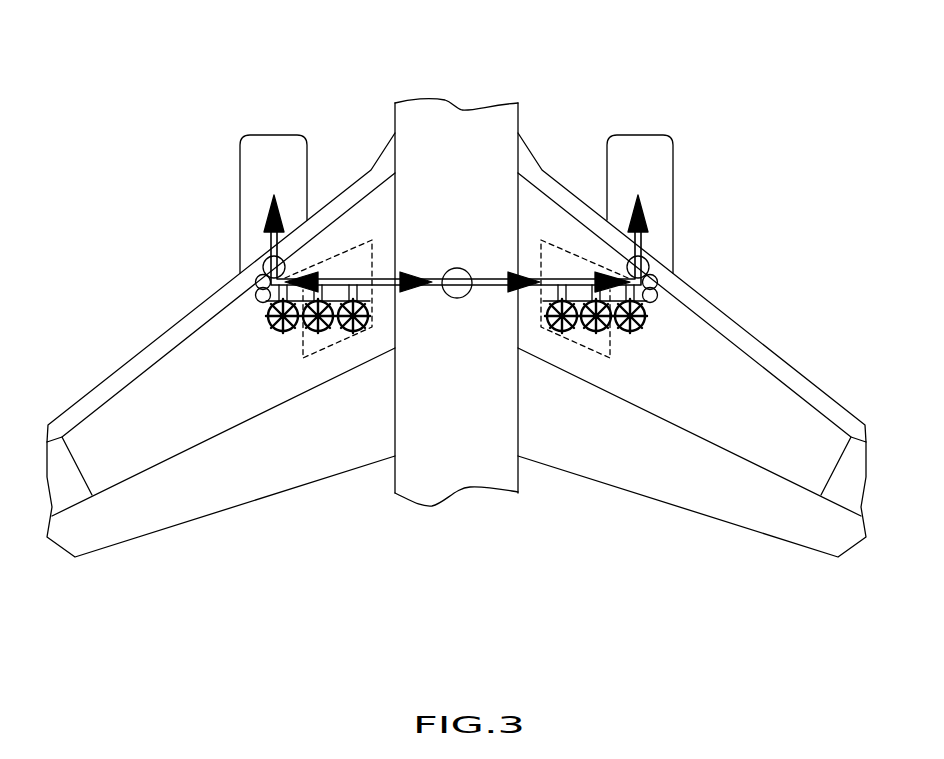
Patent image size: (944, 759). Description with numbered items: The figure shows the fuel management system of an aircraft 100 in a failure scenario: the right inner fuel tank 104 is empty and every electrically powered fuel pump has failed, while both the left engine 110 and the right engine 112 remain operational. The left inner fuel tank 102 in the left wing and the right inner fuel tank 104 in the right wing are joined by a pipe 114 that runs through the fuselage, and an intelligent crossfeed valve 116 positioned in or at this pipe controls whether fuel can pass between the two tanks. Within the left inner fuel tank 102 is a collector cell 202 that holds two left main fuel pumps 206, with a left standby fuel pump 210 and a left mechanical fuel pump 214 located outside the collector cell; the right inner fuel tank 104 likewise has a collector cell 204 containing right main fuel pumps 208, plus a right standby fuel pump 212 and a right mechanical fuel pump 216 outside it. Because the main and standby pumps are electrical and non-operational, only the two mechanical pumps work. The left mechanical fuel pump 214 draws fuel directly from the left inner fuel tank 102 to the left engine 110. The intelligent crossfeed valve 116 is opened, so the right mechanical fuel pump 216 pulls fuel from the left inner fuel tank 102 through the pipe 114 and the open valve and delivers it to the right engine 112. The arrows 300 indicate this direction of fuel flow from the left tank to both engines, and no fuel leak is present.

The aircraft 100 is at (178, 78).
The left inner fuel tank 102 is at (155, 395).
The right inner fuel tank 104 is at (777, 385).
The left engine 110 is at (239, 150).
The right engine 112 is at (674, 135).
The pipe 114 is at (400, 290).
The intelligent crossfeed valve 116 is at (462, 298).
The collector cell 202 is at (345, 257).
The collector cell 204 is at (570, 267).
The left main fuel pumps 206 is at (318, 332).
The right main fuel pumps 208 is at (562, 332).
The left standby fuel pump 210 is at (283, 332).
The right standby fuel pump 212 is at (636, 332).
The left mechanical fuel pump 214 is at (262, 303).
The right mechanical fuel pump 216 is at (676, 297).
The arrows 300 is at (388, 276).